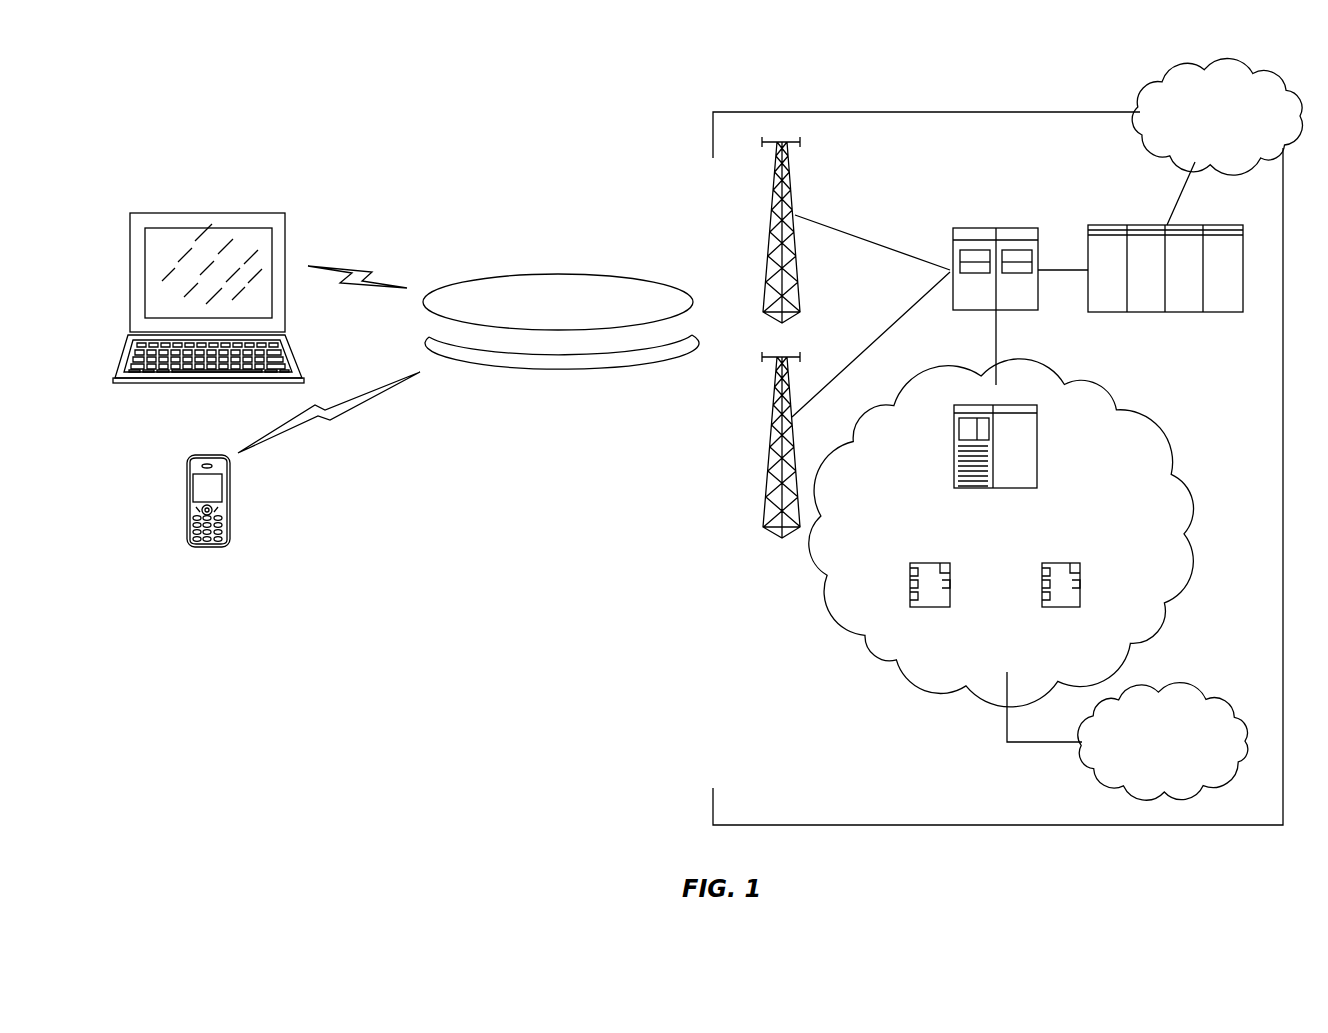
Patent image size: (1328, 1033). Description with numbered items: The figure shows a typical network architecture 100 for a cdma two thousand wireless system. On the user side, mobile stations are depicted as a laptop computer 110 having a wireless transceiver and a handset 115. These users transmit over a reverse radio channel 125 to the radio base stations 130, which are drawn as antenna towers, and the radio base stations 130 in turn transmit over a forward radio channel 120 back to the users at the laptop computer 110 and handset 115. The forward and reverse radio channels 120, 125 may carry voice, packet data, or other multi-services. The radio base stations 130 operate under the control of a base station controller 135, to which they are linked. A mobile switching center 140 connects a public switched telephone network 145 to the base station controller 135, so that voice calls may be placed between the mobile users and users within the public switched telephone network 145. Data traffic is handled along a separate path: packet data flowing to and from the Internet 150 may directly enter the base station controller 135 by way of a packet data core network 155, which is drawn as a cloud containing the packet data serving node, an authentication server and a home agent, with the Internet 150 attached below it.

The network architecture 100 is at (628, 92).
The laptop computer 110 is at (238, 215).
The handset 115 is at (208, 547).
The forward radio channel 120 is at (618, 275).
The reverse radio channel 125 is at (522, 377).
The radio base stations 130 is at (773, 408).
The base station controller 135 is at (1002, 227).
The mobile switching center 140 is at (1210, 225).
The public switched telephone network 145 is at (1255, 70).
The Internet 150 is at (1212, 695).
The packet data core network 155 is at (1058, 384).